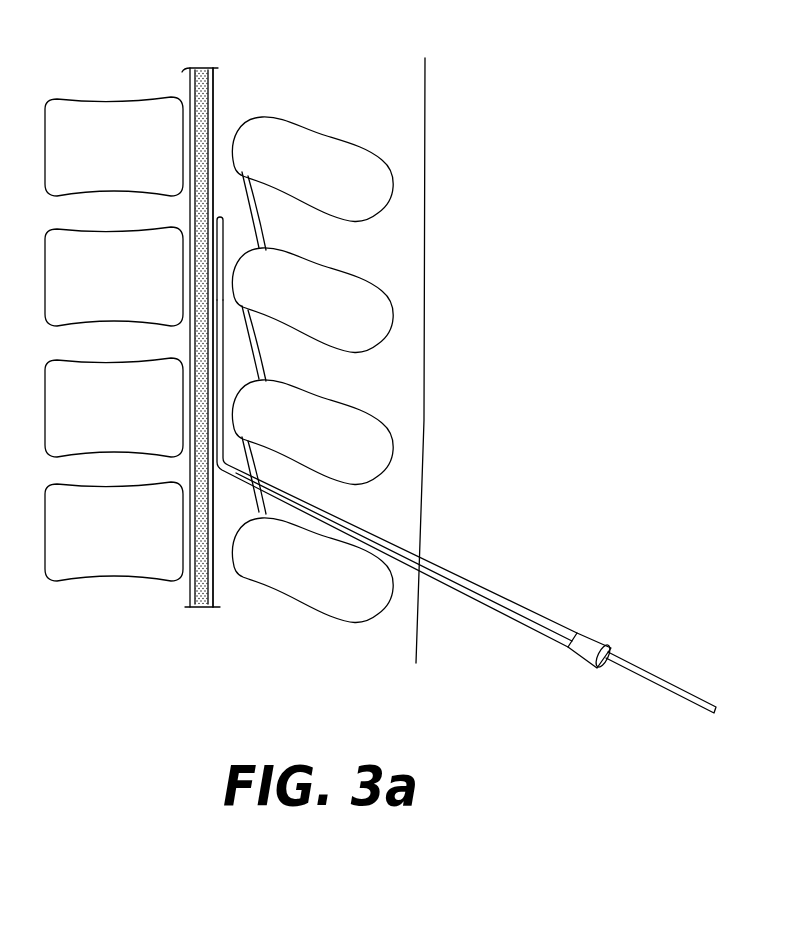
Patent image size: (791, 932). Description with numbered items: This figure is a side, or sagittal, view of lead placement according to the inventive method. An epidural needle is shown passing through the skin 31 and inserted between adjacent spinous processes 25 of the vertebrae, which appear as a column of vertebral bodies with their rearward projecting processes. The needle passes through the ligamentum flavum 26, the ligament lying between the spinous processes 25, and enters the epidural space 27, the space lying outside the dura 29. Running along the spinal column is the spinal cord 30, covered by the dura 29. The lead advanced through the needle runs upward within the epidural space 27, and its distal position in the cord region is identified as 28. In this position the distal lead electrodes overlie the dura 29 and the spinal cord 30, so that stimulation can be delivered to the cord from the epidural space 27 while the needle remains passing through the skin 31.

The spinous processes 25 is at (219, 360).
The ligamentum flavum 26 is at (252, 457).
The epidural space 27 is at (236, 349).
The distal position of the lead 28 is at (224, 232).
The dura 29 is at (213, 95).
The spinal cord 30 is at (202, 74).
The skin 31 is at (420, 494).